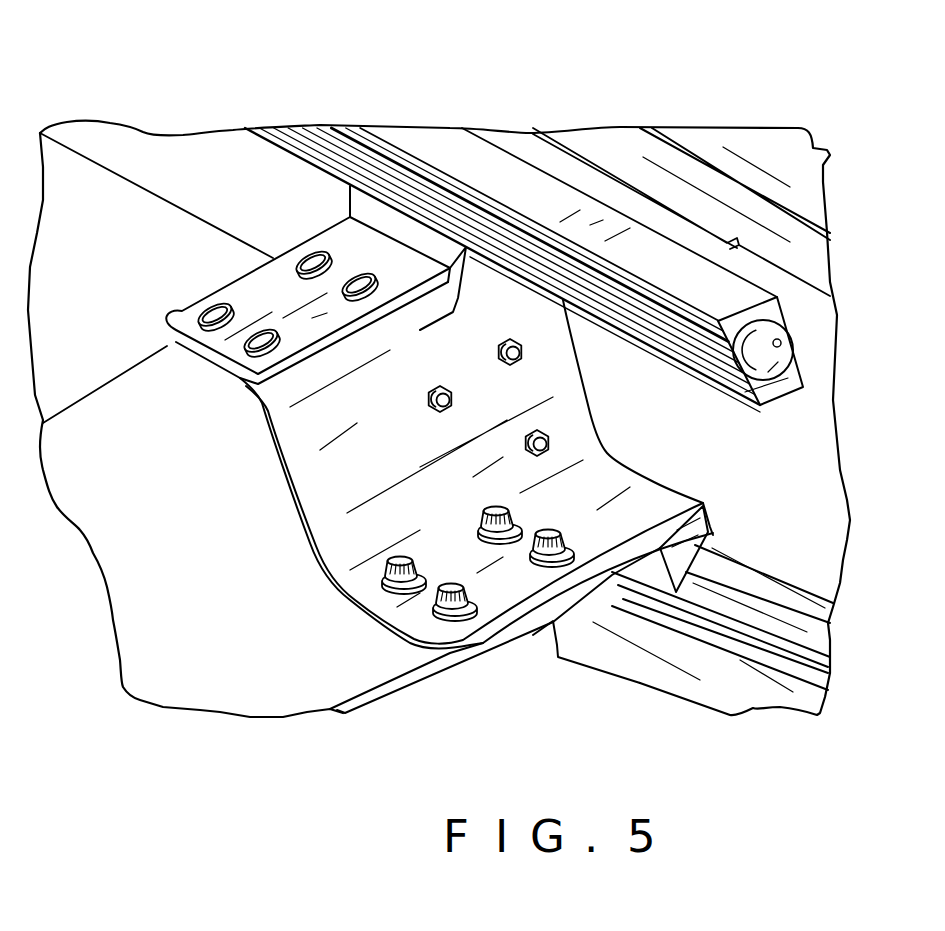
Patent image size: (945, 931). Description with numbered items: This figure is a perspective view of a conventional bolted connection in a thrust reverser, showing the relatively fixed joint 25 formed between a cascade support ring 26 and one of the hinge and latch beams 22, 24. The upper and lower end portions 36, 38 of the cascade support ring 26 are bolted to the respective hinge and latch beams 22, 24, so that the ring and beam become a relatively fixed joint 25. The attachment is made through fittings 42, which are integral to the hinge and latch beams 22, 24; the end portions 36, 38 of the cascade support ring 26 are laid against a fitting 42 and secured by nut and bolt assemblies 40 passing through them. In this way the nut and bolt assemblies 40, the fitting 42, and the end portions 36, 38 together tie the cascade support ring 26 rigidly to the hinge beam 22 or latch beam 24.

The fixed joint 25 is at (178, 104).
The hinge beam 22 is at (430, 150).
The latch beam 24 is at (674, 227).
The cascade support ring 26 is at (231, 690).
The upper end portion 36 is at (393, 695).
The lower end portion 38 is at (495, 651).
The nut and bolt assembly 40 is at (560, 535).
The fitting 42 is at (713, 532).